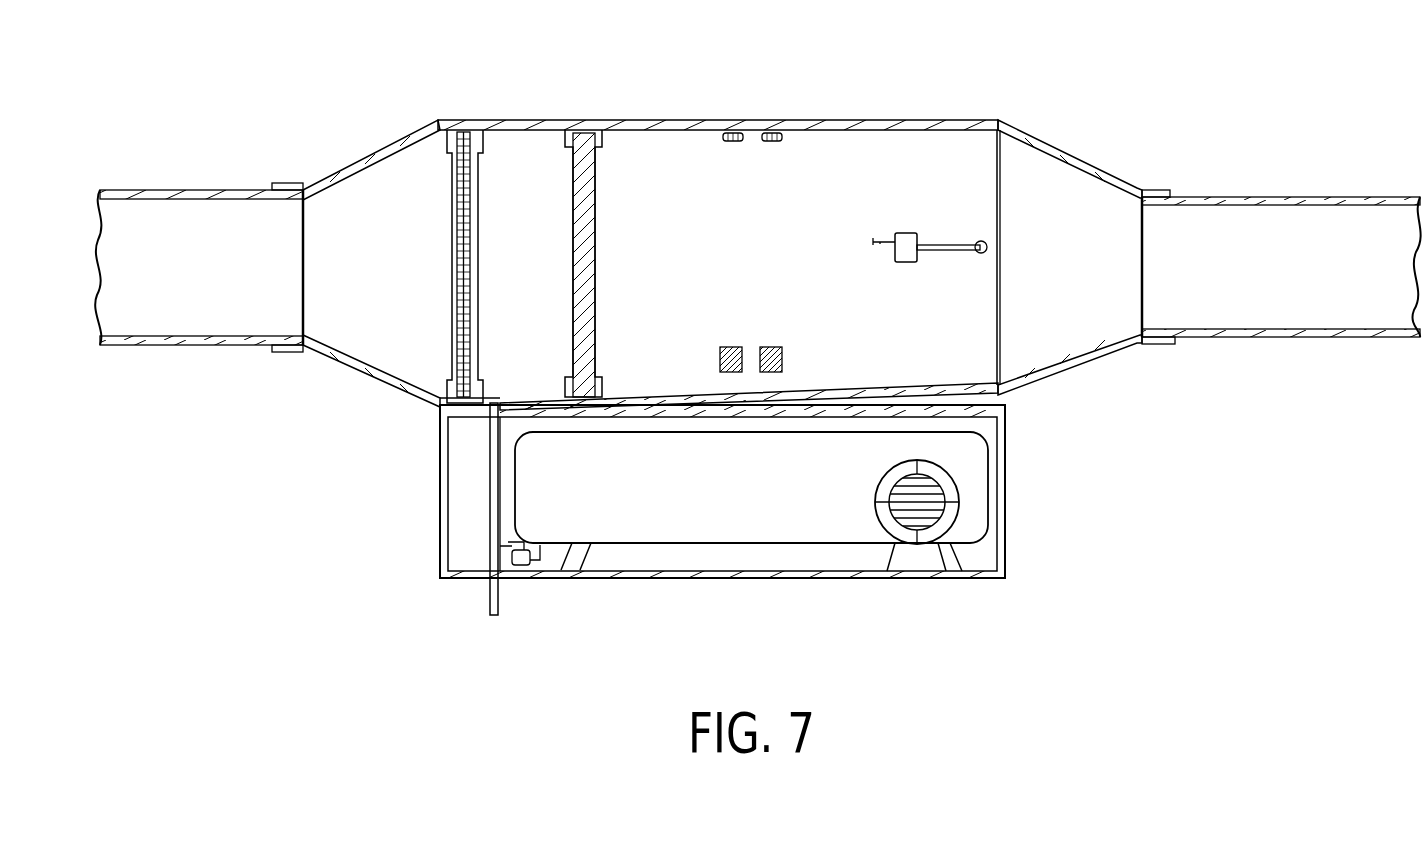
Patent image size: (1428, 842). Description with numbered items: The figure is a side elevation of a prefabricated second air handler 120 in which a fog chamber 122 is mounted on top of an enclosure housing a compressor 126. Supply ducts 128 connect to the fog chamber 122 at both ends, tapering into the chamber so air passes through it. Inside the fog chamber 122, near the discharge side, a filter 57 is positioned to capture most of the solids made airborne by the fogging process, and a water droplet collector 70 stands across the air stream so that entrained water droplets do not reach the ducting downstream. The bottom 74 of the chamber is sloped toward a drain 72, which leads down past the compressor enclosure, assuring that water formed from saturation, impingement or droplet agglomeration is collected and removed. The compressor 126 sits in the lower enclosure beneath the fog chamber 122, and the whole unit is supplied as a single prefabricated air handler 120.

The prefabricated second air handler 120 is at (972, 90).
The fog chamber 122 is at (800, 120).
The supply ducts 128 is at (188, 190).
The filter 57 is at (460, 225).
The water droplet collector 70 is at (582, 243).
The bottom 74 is at (872, 385).
The drain 72 is at (490, 477).
The compressor 126 is at (772, 522).